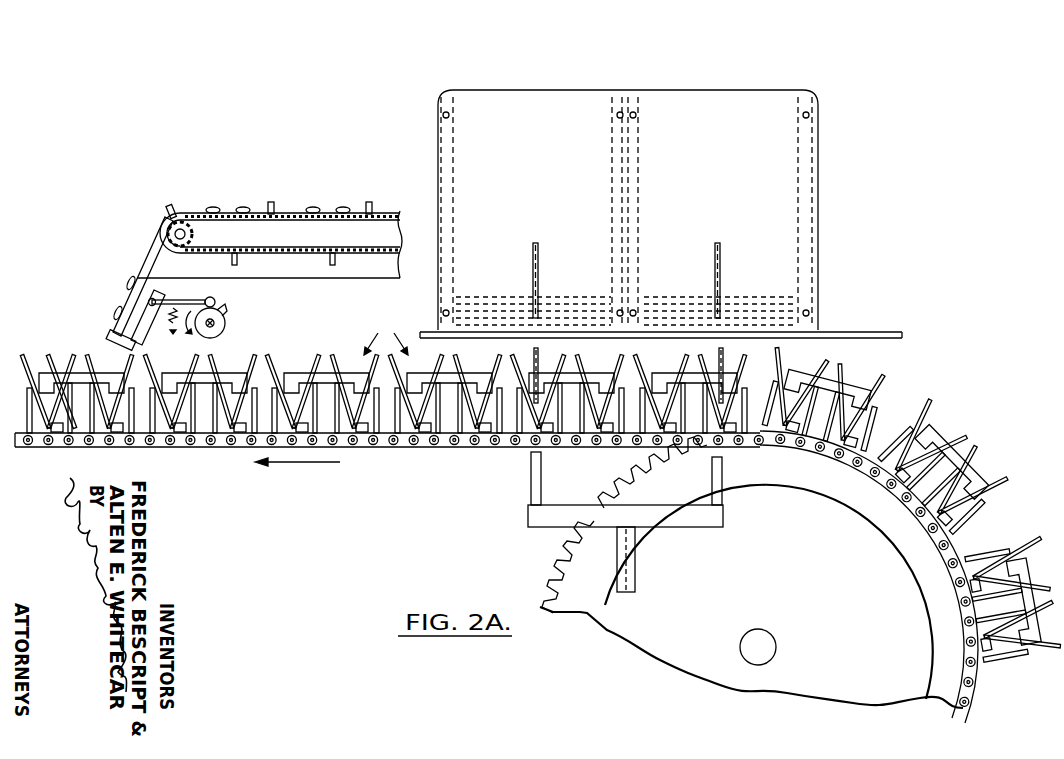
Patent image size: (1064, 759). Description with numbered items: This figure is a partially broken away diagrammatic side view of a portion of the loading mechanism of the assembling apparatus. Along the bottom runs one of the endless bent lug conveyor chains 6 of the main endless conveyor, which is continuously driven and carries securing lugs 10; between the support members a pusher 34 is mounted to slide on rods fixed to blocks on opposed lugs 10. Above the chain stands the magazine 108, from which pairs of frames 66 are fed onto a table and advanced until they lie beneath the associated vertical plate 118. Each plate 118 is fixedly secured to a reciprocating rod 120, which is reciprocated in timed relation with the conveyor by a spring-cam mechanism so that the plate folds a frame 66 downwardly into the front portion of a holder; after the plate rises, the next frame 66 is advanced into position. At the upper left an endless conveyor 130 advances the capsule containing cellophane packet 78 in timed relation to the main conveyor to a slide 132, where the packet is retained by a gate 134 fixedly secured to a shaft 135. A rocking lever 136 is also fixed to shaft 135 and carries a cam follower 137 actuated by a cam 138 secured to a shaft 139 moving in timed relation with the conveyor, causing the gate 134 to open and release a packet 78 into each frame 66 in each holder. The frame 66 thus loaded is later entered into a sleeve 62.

The conveyor chain 6 is at (443, 443).
The securing lugs 10 is at (406, 443).
The pusher 34 is at (852, 386).
The sleeve 62 is at (905, 398).
The frame 66 is at (386, 333).
The cellophane packet 78 is at (230, 206).
The magazine 108 is at (707, 70).
The vertical plate 118 is at (538, 290).
The reciprocating rod 120 is at (541, 472).
The endless conveyor 130 is at (298, 258).
The slide 132 is at (150, 260).
The gate 134 is at (147, 322).
The shaft 135 is at (156, 298).
The rocking lever 136 is at (185, 300).
The cam follower 137 is at (216, 300).
The cam 138 is at (228, 318).
The shaft 139 is at (216, 325).